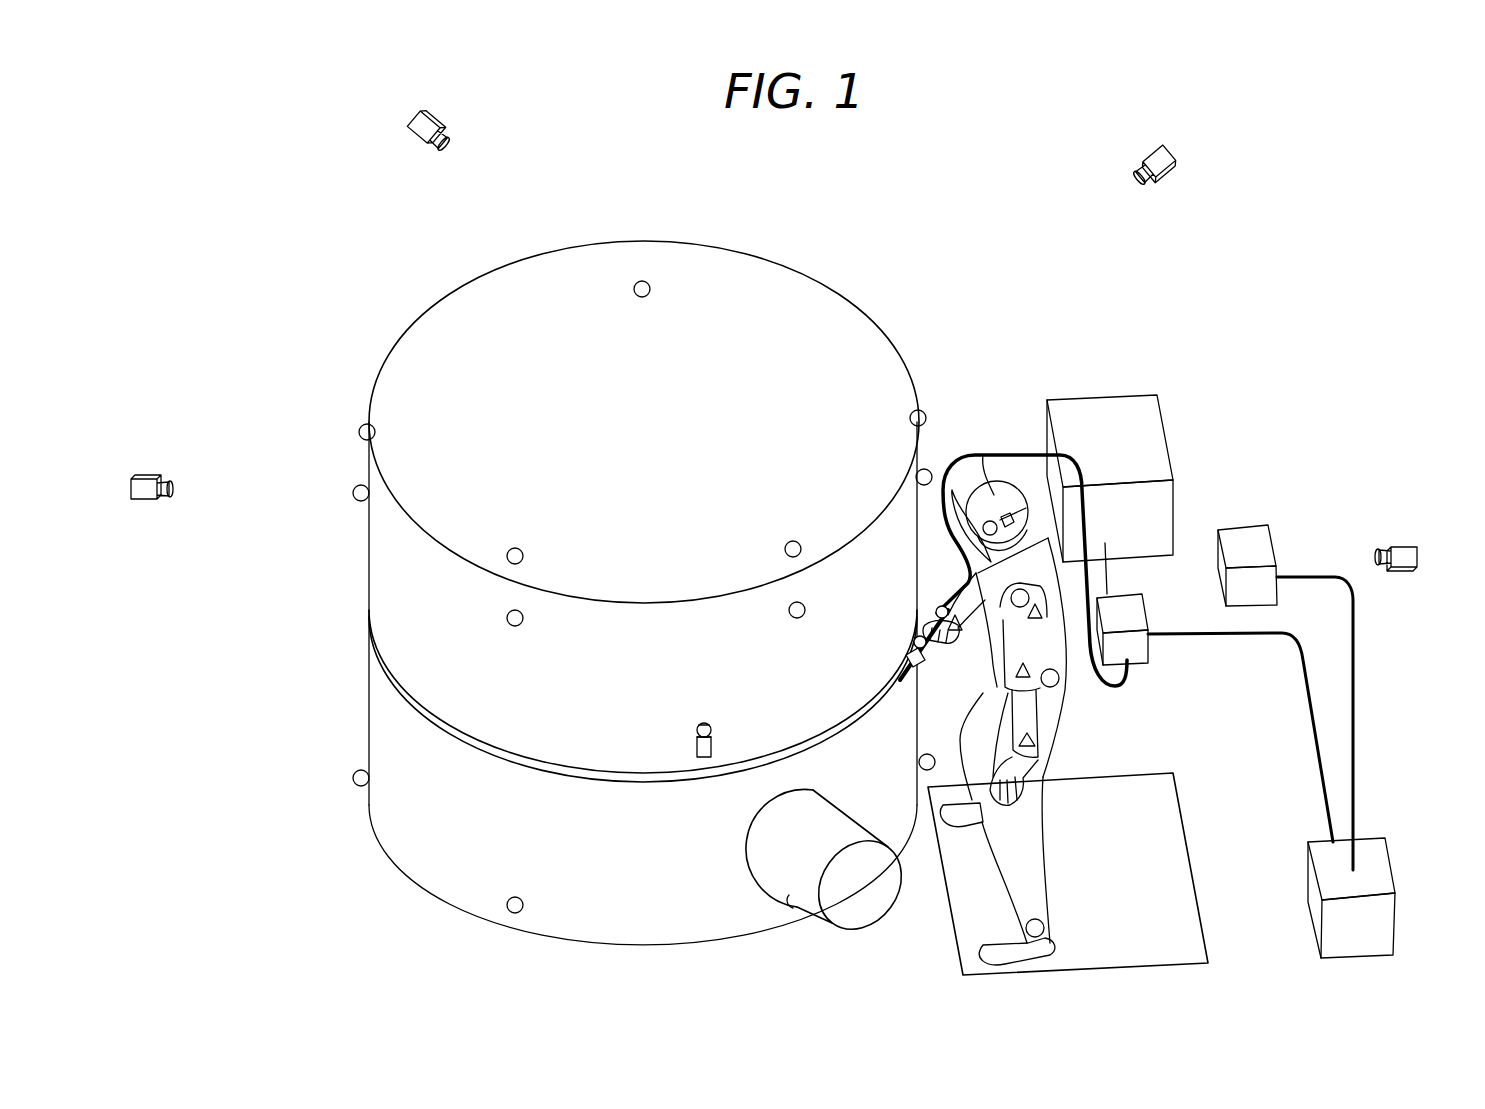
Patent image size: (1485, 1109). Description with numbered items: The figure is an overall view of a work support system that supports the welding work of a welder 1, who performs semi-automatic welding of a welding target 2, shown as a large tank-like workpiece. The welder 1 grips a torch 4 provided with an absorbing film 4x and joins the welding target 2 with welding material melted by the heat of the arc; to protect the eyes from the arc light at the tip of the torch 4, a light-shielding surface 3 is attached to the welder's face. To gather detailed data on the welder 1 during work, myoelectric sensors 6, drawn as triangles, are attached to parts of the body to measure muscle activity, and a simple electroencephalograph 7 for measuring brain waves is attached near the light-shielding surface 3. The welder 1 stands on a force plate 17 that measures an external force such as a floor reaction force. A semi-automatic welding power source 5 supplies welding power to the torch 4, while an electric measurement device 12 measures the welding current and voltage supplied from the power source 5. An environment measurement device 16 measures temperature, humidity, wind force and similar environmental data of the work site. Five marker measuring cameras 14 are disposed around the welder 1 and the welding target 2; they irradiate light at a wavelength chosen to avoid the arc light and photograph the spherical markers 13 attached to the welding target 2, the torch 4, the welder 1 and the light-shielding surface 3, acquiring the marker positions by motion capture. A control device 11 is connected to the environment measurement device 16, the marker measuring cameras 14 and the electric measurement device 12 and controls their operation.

The welder 1 is at (972, 400).
The welding target 2 is at (340, 245).
The light-shielding surface 3 is at (963, 523).
The torch 4 is at (915, 652).
The absorbing film 4x is at (934, 616).
The semi-automatic welding power source 5 is at (1140, 435).
The myoelectric sensor 6 is at (1032, 735).
The simple electroencephalograph 7 is at (1003, 497).
The control device 11 is at (1364, 910).
The electric measurement device 12 is at (1148, 607).
The marker 13 is at (650, 295).
The marker measuring camera 14 is at (410, 125).
The environment measurement device 16 is at (1255, 530).
The force plate 17 is at (1178, 926).